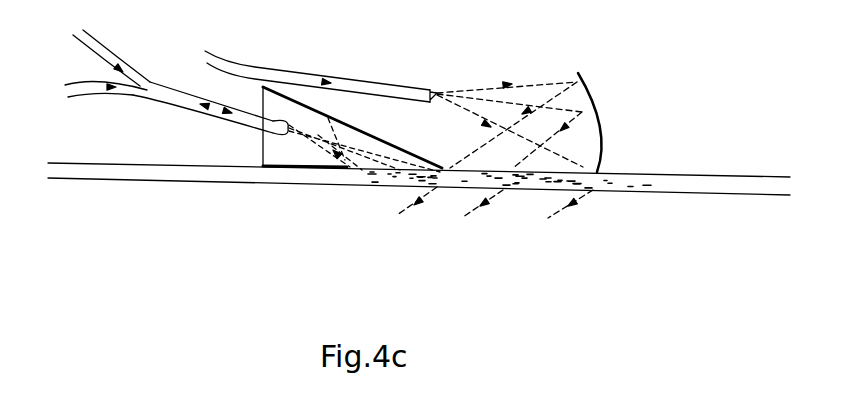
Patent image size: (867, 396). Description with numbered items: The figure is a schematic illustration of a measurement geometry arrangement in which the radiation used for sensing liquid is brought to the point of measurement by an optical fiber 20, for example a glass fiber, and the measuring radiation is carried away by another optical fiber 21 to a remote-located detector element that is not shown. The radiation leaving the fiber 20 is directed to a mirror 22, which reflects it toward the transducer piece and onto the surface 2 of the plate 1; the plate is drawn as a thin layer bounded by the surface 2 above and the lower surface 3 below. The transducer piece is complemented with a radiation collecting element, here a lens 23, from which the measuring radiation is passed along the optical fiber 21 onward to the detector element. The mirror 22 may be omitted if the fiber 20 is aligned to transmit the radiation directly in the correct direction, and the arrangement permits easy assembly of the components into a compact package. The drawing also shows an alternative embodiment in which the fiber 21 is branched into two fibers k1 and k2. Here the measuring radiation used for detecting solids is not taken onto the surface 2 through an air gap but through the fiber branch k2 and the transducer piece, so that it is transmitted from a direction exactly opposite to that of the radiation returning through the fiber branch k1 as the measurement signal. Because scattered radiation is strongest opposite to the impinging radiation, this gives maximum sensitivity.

The plate 1 is at (633, 178).
The surface of the plate 2 is at (695, 175).
The lower boundary surface of substrate 3 is at (700, 195).
The optical fiber 20 is at (253, 66).
The optical fiber 21 is at (190, 103).
The mirror 22 is at (595, 103).
The lens 23 is at (283, 117).
The optical fiber branch k1 is at (118, 72).
The optical fiber branch k2 is at (112, 93).